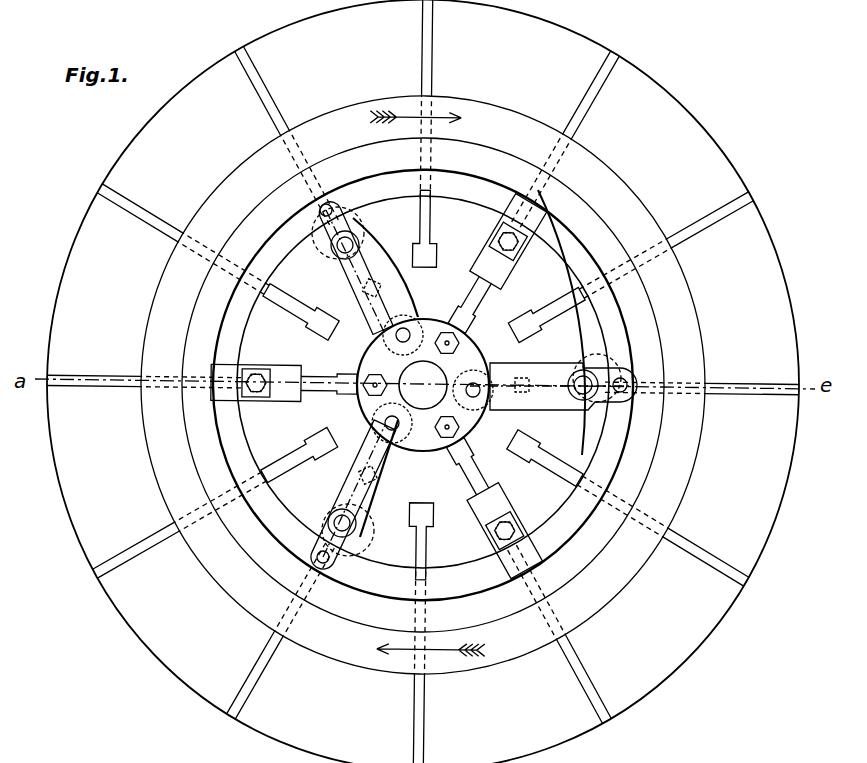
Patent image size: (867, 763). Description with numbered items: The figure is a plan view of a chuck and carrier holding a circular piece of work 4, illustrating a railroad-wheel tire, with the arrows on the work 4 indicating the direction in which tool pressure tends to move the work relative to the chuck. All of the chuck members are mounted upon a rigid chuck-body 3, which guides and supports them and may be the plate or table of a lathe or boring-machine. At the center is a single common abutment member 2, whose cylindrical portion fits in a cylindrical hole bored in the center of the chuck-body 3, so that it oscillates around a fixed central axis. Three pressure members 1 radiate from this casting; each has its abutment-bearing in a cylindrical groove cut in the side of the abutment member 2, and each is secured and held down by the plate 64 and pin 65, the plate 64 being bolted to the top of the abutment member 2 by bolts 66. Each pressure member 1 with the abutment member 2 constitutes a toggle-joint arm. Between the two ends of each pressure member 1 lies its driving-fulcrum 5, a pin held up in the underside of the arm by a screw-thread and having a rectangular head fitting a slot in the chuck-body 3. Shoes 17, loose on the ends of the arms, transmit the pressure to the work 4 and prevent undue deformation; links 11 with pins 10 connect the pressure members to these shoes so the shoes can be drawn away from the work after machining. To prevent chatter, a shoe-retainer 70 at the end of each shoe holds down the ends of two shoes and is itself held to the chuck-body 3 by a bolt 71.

The pressure member 1 is at (474, 385).
The abutment member 2 is at (423, 385).
The chuck-body 3 is at (422, 381).
The work 4 is at (423, 383).
The driving-fulcrum 5 is at (522, 380).
The pin 10 is at (330, 508).
The link 11 is at (342, 546).
The shoe 17 is at (444, 384).
The plate 64 is at (411, 393).
The pin 65 is at (342, 418).
The bolts 66 is at (498, 310).
The shoe-retainer 70 is at (484, 520).
The bolt 71 is at (512, 524).